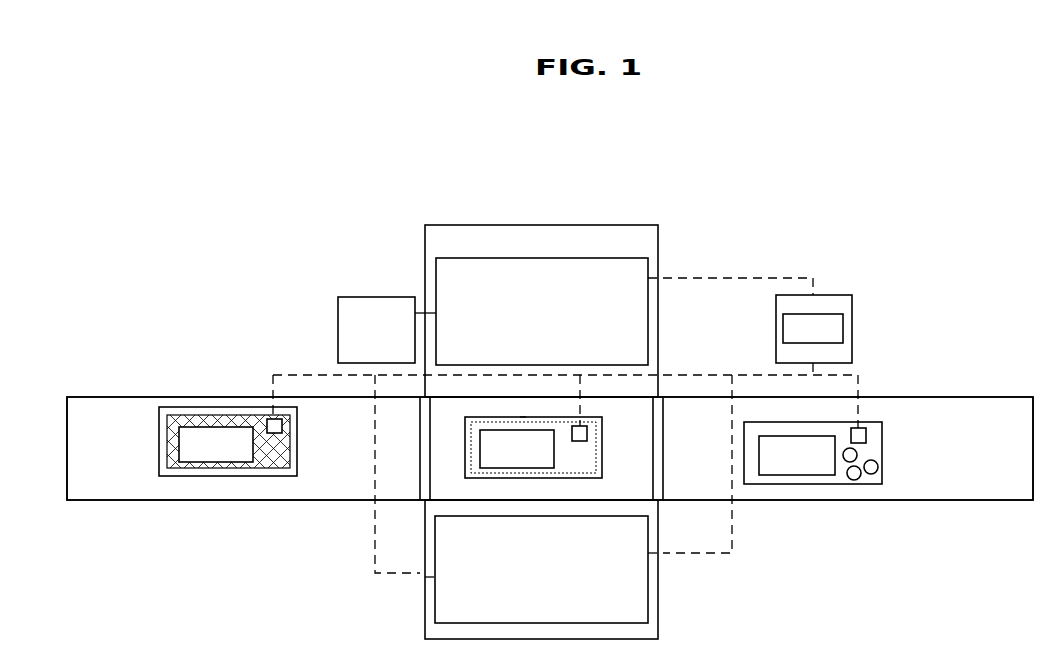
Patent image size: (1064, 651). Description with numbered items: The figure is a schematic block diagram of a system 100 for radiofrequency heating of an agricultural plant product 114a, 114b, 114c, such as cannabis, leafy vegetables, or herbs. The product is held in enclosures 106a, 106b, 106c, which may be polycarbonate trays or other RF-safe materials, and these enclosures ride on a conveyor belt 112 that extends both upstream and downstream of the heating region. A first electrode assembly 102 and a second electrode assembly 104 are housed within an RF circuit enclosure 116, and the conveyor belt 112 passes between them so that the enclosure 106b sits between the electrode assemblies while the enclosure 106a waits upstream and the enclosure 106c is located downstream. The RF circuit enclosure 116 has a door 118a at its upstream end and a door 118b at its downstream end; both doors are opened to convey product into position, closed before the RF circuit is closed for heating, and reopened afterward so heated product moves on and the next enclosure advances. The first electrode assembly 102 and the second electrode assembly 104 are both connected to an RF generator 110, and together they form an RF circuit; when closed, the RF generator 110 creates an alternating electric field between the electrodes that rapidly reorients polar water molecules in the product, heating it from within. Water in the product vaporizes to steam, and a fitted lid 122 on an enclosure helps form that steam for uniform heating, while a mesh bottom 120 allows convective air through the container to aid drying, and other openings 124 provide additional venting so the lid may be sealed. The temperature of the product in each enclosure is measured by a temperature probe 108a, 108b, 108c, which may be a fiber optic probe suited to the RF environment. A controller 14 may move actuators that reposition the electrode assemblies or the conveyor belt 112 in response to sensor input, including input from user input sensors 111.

The system 100 is at (854, 157).
The first electrode assembly 102 is at (648, 318).
The second electrode assembly 104 is at (648, 578).
The enclosure 106a is at (297, 465).
The enclosure 106b is at (602, 472).
The enclosure 106c is at (882, 475).
The temperature probe 108a is at (282, 425).
The temperature probe 108b is at (587, 430).
The temperature probe 108c is at (866, 437).
The RF generator 110 is at (338, 326).
The user input sensors 111 is at (829, 341).
The conveyor belt 112 is at (243, 500).
The agricultural plant product 114a is at (239, 456).
The agricultural plant product 114b is at (540, 461).
The agricultural plant product 114c is at (820, 469).
The RF circuit enclosure 116 is at (600, 225).
The door 118a is at (420, 472).
The door 118b is at (663, 470).
The mesh bottom 120 is at (260, 448).
The fitted lid 122 is at (522, 417).
The openings 124 is at (868, 475).
The controller 14 is at (852, 295).